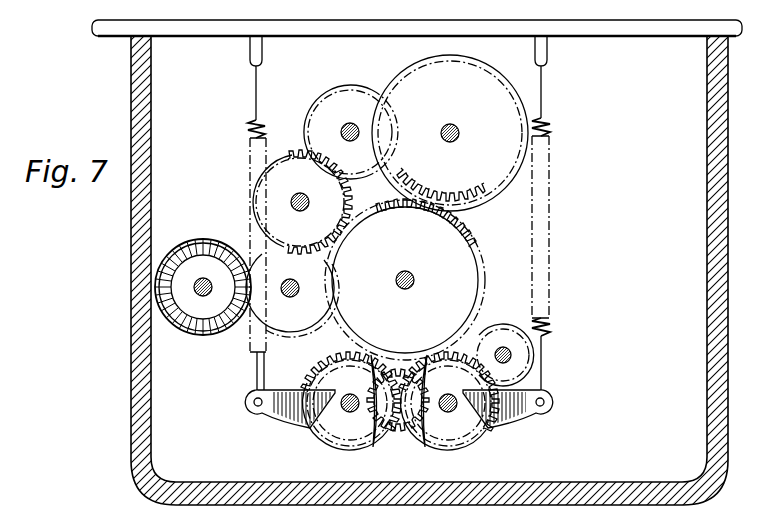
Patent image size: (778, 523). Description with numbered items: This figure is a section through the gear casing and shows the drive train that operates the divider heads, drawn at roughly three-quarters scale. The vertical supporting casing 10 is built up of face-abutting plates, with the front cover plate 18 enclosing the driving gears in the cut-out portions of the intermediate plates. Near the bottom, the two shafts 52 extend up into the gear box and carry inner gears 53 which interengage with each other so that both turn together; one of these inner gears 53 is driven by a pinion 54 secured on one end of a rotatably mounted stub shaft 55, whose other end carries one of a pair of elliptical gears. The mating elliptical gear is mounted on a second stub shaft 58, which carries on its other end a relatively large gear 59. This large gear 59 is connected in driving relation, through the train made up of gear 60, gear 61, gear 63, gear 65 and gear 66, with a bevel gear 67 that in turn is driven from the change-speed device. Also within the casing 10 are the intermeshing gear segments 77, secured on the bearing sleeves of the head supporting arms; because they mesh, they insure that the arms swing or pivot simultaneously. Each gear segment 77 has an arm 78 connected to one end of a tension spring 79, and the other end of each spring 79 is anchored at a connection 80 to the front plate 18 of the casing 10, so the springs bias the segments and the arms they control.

The supporting casing 10 is at (733, 31).
The front cover plate 18 is at (622, 37).
The shaft 52 is at (345, 410).
The inner gear 53 is at (344, 452).
The pinion 54 is at (503, 326).
The stub shaft 55 is at (512, 355).
The stub shaft 58 is at (403, 271).
The large gear 59 is at (469, 242).
The gear 60 is at (495, 83).
The gear 61 is at (288, 163).
The gear 63 is at (349, 86).
The gear 65 is at (275, 331).
The gear 66 is at (203, 338).
The bevel gear 67 is at (204, 240).
The gear segment 77 is at (417, 442).
The arm 78 is at (527, 421).
The tension spring 79 is at (551, 326).
The spring connection 80 is at (549, 53).